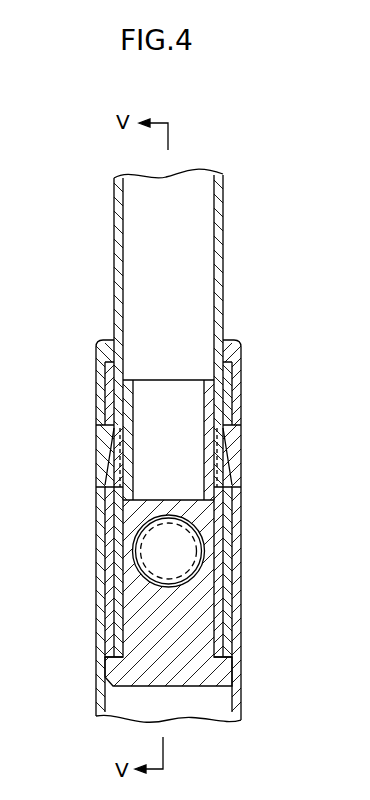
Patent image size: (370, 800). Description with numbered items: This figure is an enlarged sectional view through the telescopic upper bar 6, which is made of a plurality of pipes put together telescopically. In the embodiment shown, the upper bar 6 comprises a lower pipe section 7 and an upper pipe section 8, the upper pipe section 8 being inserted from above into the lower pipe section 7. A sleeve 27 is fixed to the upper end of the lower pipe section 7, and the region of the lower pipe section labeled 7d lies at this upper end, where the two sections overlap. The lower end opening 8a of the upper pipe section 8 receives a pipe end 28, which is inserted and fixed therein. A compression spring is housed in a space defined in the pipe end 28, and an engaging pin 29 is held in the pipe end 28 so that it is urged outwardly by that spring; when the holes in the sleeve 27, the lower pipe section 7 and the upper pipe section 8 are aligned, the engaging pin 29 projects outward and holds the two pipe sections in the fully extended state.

The upper bar 6 is at (84, 411).
The lower pipe section 7 is at (96, 580).
The upper end of lower tube 7d is at (244, 352).
The upper pipe section 8 is at (114, 233).
The lower end opening 8a is at (234, 640).
The sleeve 27 is at (98, 348).
The pipe end 28 is at (232, 686).
The engaging pin 29 is at (200, 555).